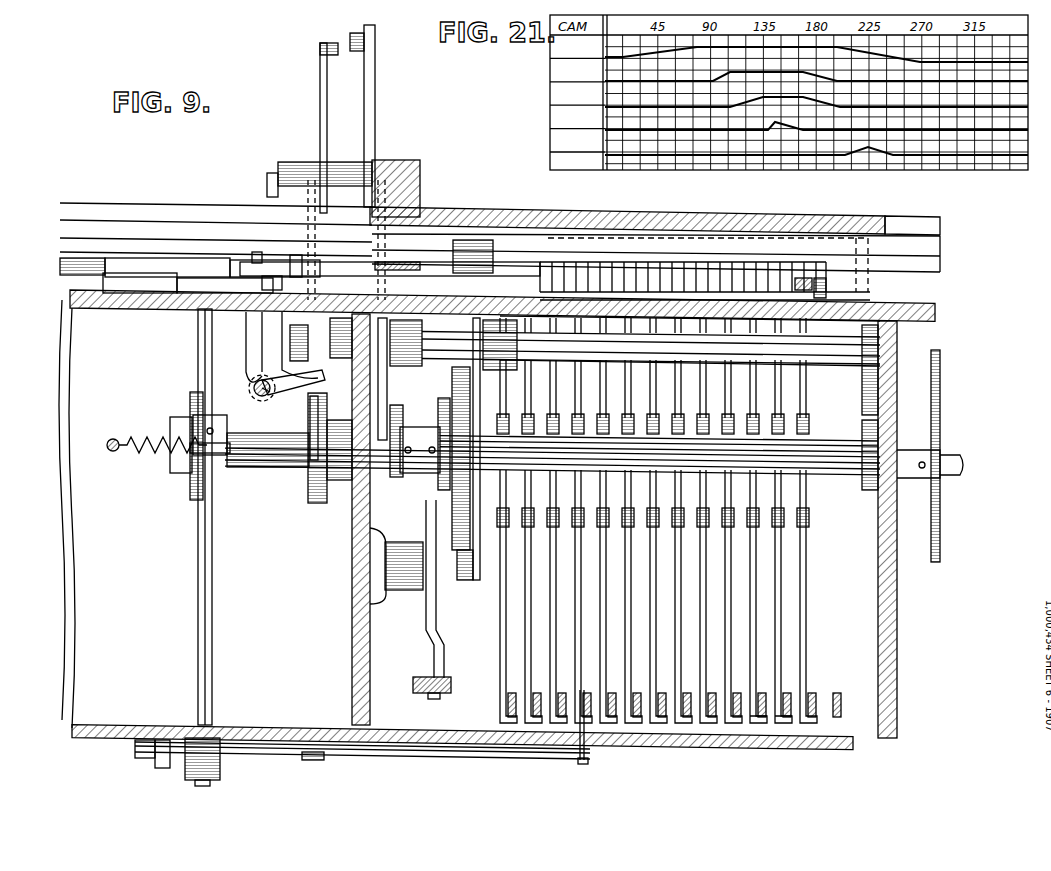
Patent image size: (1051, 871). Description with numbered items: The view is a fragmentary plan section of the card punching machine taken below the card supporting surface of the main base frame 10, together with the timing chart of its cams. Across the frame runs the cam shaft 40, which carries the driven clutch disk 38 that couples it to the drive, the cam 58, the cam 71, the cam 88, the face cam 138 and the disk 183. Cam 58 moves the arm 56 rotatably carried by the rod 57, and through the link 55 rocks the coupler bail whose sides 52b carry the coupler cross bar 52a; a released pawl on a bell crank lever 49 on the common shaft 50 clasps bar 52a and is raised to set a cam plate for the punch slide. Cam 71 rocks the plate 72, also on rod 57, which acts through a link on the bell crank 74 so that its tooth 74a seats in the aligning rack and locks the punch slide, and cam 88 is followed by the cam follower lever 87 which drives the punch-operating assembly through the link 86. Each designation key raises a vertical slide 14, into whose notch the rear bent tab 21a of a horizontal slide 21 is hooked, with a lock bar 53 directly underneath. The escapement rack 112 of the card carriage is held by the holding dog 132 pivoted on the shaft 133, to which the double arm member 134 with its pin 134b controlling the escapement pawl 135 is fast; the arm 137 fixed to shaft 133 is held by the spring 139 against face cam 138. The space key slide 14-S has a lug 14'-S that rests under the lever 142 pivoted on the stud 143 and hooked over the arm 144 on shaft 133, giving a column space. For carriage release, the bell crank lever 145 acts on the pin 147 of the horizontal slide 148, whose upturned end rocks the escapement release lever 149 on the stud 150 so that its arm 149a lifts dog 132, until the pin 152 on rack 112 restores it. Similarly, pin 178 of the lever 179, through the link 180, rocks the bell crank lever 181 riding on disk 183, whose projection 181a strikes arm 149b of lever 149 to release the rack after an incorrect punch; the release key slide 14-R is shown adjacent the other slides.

In FIG. 9, the main base frame 10 is at (640, 214).
In FIG. 9, the vertical slide 14 is at (650, 676).
In FIG. 9, the reset contact 14-R is at (840, 693).
In FIG. 9, the space key slide 14-S is at (582, 690).
In FIG. 9, the lug 14'-S is at (608, 774).
In FIG. 9, the horizontal slide 21 is at (600, 327).
In FIG. 9, the rear bent tab 21a is at (808, 724).
In FIG. 9, the driven clutch disk 38 is at (940, 362).
In FIG. 9, the cam shaft 40 is at (275, 462).
In FIG. 9, the bell crank lever 49 is at (625, 528).
In FIG. 9, the common shaft 50 is at (578, 436).
In FIG. 9, the coupler cross bar 52a is at (575, 230).
In FIG. 9, the coupler bail sides 52b is at (820, 385).
In FIG. 9, the lock bar 53 is at (606, 277).
In FIG. 9, the link 55 is at (462, 585).
In FIG. 9, the arm 56 is at (474, 578).
In FIG. 9, the rod 57 is at (578, 358).
In FIG. 21, the cam 58 is at (798, 52).
In FIG. 9, the cam 58 is at (452, 510).
In FIG. 21, the cam 71 is at (800, 73).
In FIG. 9, the cam 71 is at (396, 477).
In FIG. 9, the plate 72 is at (388, 385).
In FIG. 9, the bell crank 74 is at (376, 96).
In FIG. 9, the tooth 74a is at (356, 50).
In FIG. 9, the link 86 is at (448, 678).
In FIG. 9, the cam follower lever 87 is at (426, 612).
In FIG. 21, the cam 88 is at (798, 98).
In FIG. 9, the cam 88 is at (440, 406).
In FIG. 9, the escapement rack 112 is at (68, 276).
In FIG. 9, the holding dog 132 is at (278, 264).
In FIG. 9, the shaft 133 is at (210, 612).
In FIG. 9, the double arm member 134 is at (195, 295).
In FIG. 9, the pin 134b is at (228, 244).
In FIG. 9, the escapement pawl 135 is at (160, 243).
In FIG. 9, the arm 137 is at (228, 455).
In FIG. 21, the face cam 138 is at (795, 146).
In FIG. 9, the face cam 138 is at (192, 495).
In FIG. 9, the spring 139 is at (143, 452).
In FIG. 9, the lever 142 is at (400, 752).
In FIG. 9, the stud 143 is at (313, 762).
In FIG. 9, the arm 144 is at (140, 760).
In FIG. 9, the bell crank lever 145 is at (804, 278).
In FIG. 9, the pin 147 is at (828, 285).
In FIG. 9, the horizontal slide 148 is at (662, 292).
In FIG. 9, the escapement release lever 149 is at (258, 396).
In FIG. 9, the arm 149a is at (252, 345).
In FIG. 9, the arm 149b is at (305, 385).
In FIG. 9, the stud 150 is at (268, 396).
In FIG. 9, the pin 152 is at (256, 250).
In FIG. 9, the pin 178 is at (326, 45).
In FIG. 9, the lever 179 is at (320, 110).
In FIG. 9, the link 180 is at (316, 240).
In FIG. 9, the bell crank lever 181 is at (318, 418).
In FIG. 9, the projection 181a is at (298, 372).
In FIG. 21, the disk 183 is at (795, 121).
In FIG. 9, the disk 183 is at (328, 500).